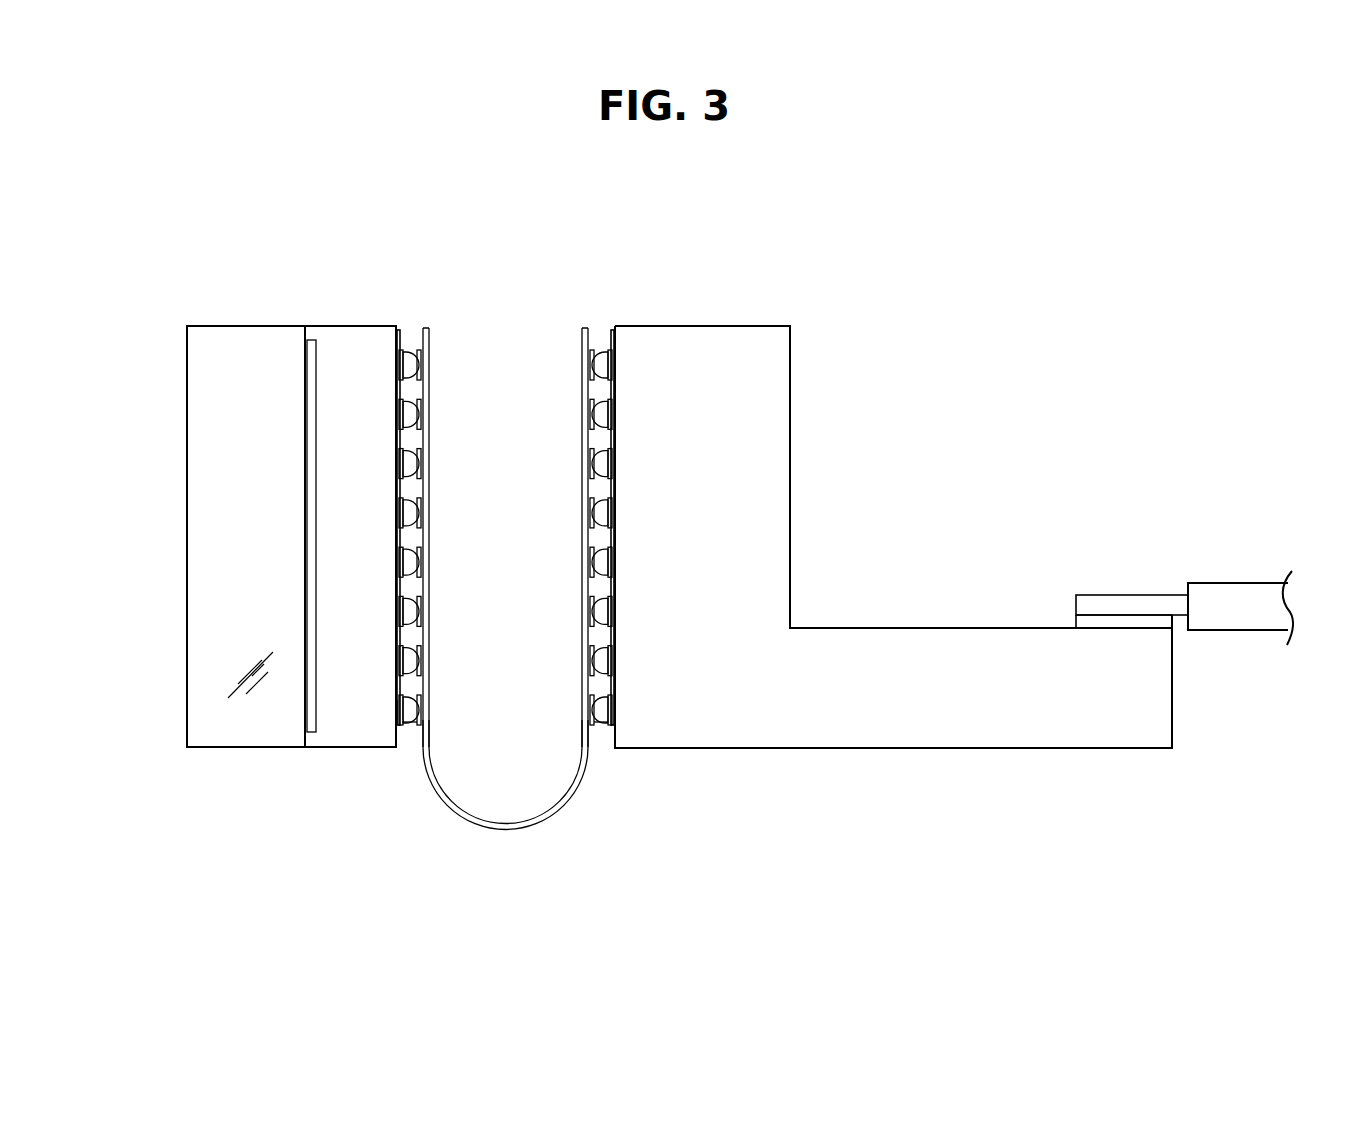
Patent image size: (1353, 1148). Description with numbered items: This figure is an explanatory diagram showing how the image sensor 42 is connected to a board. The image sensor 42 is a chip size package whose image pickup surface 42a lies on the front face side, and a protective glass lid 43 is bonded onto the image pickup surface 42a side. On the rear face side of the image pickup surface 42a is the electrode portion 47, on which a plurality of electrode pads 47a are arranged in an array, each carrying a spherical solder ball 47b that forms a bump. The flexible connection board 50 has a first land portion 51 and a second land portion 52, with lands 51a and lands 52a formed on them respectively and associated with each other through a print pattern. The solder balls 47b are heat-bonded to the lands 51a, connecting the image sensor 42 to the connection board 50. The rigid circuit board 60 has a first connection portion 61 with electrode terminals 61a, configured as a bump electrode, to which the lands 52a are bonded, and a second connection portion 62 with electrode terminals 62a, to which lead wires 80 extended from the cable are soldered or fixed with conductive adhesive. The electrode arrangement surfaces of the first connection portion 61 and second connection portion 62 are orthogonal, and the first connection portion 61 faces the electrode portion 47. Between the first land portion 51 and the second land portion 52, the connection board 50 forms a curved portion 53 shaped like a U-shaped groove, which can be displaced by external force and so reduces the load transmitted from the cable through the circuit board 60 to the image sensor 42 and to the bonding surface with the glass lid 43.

The image sensor 42 is at (343, 326).
The image pickup surface 42a is at (310, 498).
The glass lid 43 is at (258, 326).
The electrode portion 47 is at (400, 324).
The electrode pad 47a is at (396, 707).
The solder ball 47b is at (412, 726).
The connection board 50 is at (508, 572).
The first land portion 51 is at (421, 324).
The land 51a is at (416, 708).
The second land portion 52 is at (595, 325).
The land 52a is at (595, 708).
The curved portion 53 is at (507, 832).
The circuit board 60 is at (717, 312).
The first connection portion 61 is at (608, 325).
The electrode terminal 61a is at (601, 722).
The second connection portion 62 is at (1062, 617).
The electrode terminal 62a is at (1123, 628).
The lead wire 80 is at (1238, 583).